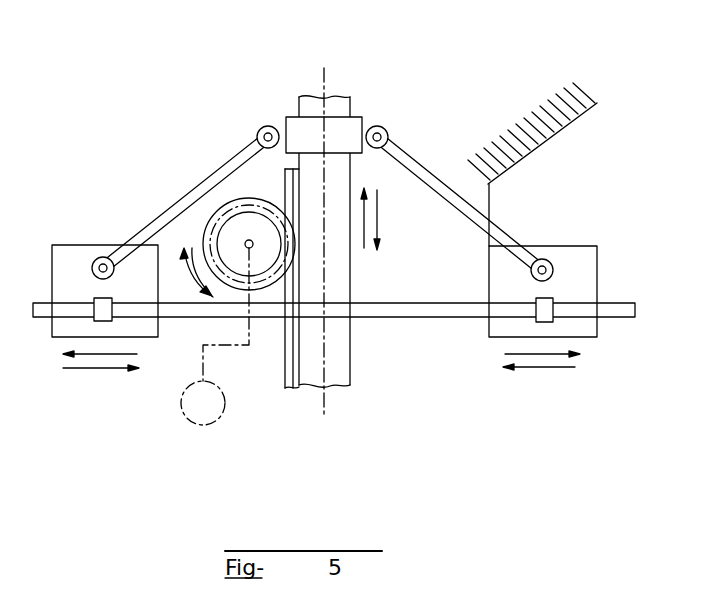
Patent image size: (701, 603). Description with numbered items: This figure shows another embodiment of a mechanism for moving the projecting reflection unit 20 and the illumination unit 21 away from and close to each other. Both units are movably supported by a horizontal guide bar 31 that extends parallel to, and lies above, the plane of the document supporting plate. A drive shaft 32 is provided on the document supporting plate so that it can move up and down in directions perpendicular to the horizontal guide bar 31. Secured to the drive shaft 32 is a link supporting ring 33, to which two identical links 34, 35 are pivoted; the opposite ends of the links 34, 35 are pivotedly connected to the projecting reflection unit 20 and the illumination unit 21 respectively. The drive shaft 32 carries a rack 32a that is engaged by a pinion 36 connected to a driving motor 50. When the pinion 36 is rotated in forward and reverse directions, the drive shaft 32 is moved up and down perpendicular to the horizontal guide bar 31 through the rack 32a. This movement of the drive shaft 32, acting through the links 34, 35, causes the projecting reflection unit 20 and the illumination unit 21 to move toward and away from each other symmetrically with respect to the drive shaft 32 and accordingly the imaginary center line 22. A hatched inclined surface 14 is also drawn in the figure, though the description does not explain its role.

The inclined guide surface 14 is at (570, 124).
The projecting reflection unit 20 is at (576, 251).
The illumination unit 21 is at (78, 256).
The imaginary center line 22 is at (334, 76).
The horizontal guide bar 31 is at (614, 313).
The drive shaft 32 is at (346, 293).
The rack 32a is at (286, 382).
The link supporting ring 33 is at (353, 125).
The link 34 is at (420, 168).
The link 35 is at (200, 185).
The pinion 36 is at (249, 240).
The driving motor 50 is at (182, 397).